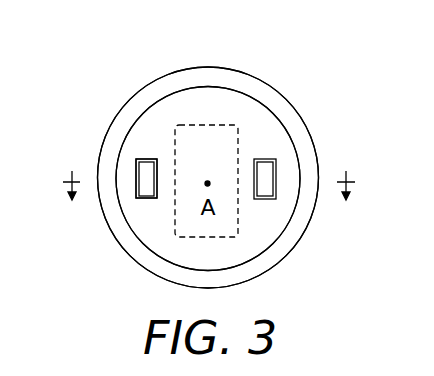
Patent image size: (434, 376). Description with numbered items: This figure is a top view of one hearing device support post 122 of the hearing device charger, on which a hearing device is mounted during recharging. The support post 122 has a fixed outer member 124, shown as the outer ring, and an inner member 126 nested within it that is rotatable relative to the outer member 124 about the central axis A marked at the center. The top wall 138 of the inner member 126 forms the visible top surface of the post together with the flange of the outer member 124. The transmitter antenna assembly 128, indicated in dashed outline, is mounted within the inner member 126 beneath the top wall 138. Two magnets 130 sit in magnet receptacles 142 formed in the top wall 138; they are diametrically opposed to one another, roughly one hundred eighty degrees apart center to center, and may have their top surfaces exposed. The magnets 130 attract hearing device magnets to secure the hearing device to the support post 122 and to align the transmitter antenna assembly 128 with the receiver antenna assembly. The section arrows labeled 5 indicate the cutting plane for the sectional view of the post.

The hearing device support post 122 is at (178, 41).
The outer member 124 is at (135, 95).
The inner member 126 is at (243, 93).
The transmitter antenna assembly 128 is at (205, 123).
The magnets 130 is at (143, 160).
The magnet receptacles 142 is at (137, 178).
The top wall 138 is at (147, 220).
The section line 5- 5 is at (210, 183).